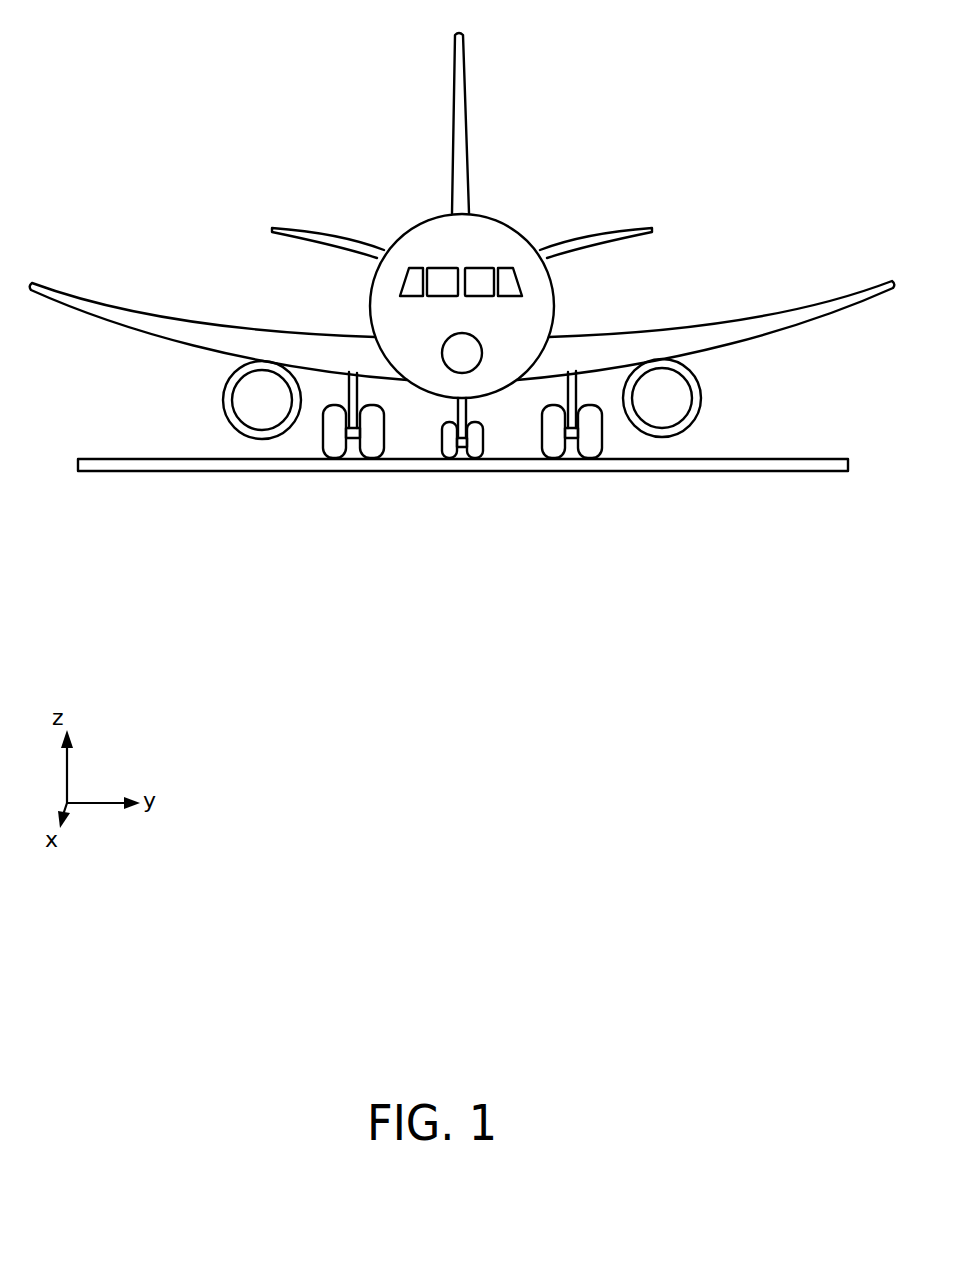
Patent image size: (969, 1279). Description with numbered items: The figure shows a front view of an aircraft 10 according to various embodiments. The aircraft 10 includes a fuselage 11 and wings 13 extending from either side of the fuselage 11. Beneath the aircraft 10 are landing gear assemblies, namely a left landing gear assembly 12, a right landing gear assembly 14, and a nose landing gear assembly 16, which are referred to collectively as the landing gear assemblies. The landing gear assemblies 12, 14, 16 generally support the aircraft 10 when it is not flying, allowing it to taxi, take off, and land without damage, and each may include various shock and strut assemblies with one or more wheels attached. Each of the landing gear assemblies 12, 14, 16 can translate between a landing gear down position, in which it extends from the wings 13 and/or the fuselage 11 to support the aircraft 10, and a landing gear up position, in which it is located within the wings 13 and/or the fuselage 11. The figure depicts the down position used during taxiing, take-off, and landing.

The aircraft 10 is at (299, 128).
The fuselage 11 is at (491, 238).
The left landing gear assembly 12 is at (612, 440).
The wings 13 is at (170, 330).
The right landing gear assembly 14 is at (310, 442).
The nose landing gear assembly 16 is at (486, 425).